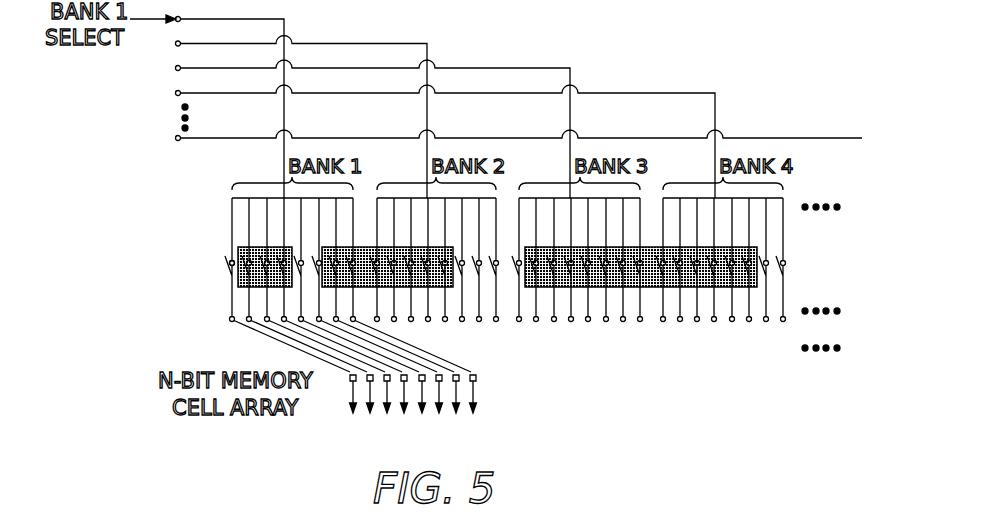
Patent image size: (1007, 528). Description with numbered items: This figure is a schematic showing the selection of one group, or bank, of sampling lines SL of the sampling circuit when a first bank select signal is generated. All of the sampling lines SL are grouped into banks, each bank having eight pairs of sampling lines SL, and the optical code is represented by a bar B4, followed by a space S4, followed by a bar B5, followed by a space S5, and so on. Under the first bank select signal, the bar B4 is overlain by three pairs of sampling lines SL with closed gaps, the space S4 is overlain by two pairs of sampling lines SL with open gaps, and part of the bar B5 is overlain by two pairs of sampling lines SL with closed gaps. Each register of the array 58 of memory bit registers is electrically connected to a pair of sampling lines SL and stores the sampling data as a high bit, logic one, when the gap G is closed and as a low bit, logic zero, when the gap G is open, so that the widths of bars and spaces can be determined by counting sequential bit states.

The space S4 is at (305, 262).
The sampling lines SL is at (232, 246).
The gap G is at (229, 263).
The bar B4 is at (243, 287).
The bar B5 is at (362, 247).
The space S5 is at (488, 307).
The array of memory bit registers 58 is at (478, 372).